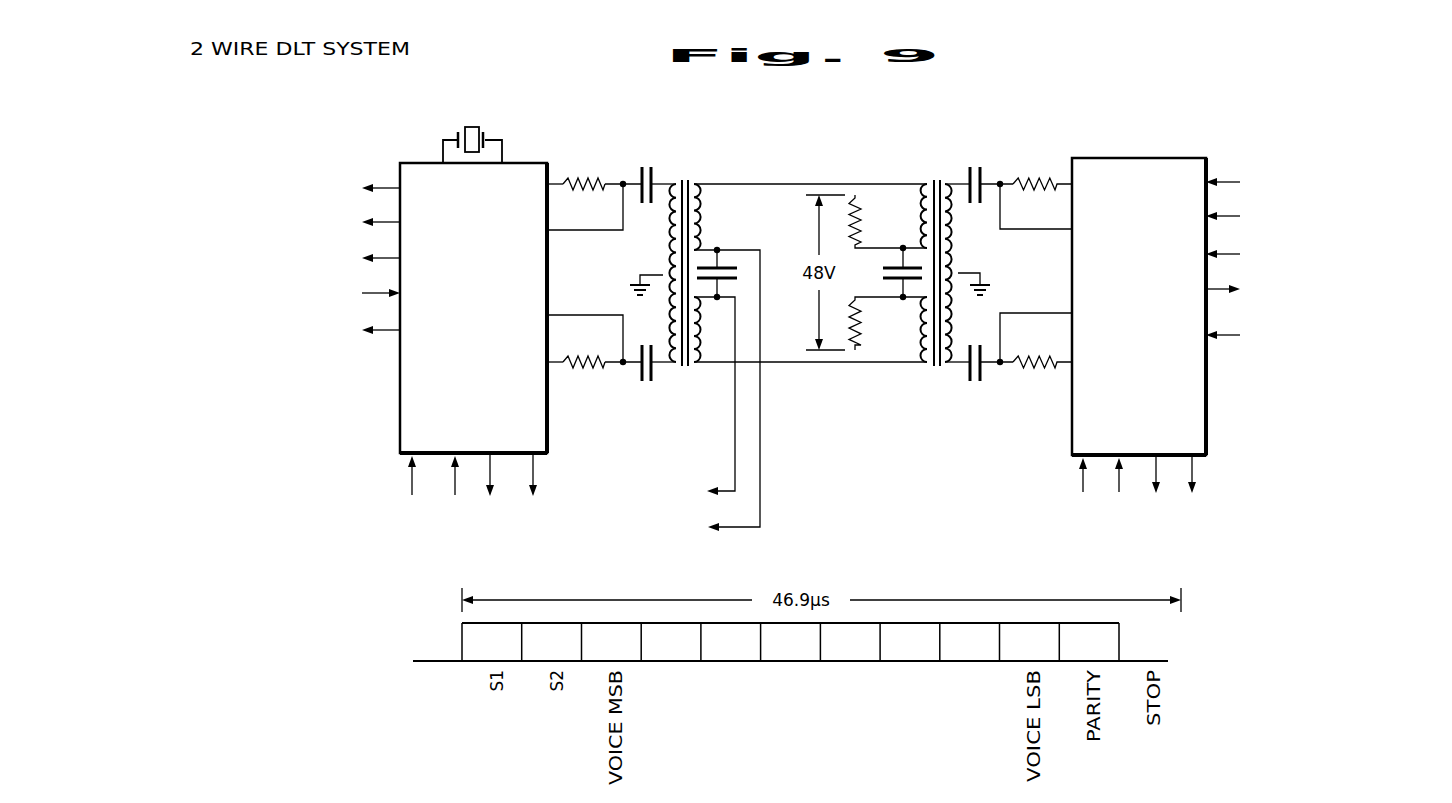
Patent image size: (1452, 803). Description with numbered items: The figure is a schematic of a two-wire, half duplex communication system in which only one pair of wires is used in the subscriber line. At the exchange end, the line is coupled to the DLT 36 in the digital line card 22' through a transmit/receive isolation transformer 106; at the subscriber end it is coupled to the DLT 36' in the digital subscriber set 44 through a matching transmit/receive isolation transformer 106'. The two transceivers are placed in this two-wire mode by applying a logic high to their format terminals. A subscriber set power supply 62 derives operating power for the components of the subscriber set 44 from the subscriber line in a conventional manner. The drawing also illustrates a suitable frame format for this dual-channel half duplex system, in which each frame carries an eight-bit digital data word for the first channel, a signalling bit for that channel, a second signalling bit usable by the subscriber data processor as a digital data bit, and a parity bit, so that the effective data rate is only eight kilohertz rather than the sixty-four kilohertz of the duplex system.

The digital loop transceiver (DLT) 36' is at (366, 339).
The digital subscriber set 44 is at (746, 173).
The transmit/receive isolation transformer 106' is at (643, 293).
The subscriber set power supply 62 is at (741, 377).
The transmit/receive isolation transformer 106 is at (953, 293).
The digital line card 22' is at (1020, 241).
The digital loop transceiver (DLT) 36 is at (1244, 352).